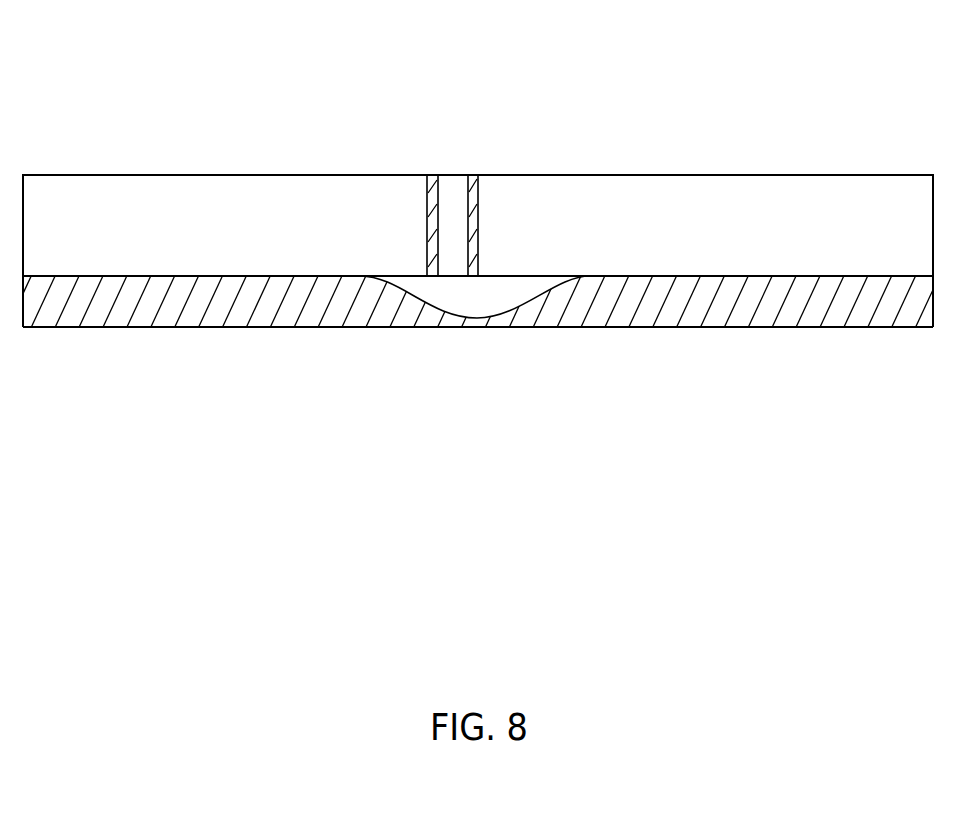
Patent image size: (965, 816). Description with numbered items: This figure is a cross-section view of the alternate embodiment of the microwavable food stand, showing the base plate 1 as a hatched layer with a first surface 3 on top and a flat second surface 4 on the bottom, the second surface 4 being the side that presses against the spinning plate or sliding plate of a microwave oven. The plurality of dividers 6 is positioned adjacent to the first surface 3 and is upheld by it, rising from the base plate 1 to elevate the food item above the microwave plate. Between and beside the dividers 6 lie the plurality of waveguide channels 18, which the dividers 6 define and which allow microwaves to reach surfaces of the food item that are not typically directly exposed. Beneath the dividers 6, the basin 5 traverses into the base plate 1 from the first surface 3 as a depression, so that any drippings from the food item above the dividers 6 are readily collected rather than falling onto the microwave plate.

The base plate 1 is at (687, 328).
The first surface 3 is at (408, 276).
The second surface 4 is at (320, 328).
The basin 5 is at (490, 310).
The plurality of dividers 6 is at (431, 178).
The plurality of waveguide channels 18 is at (175, 208).